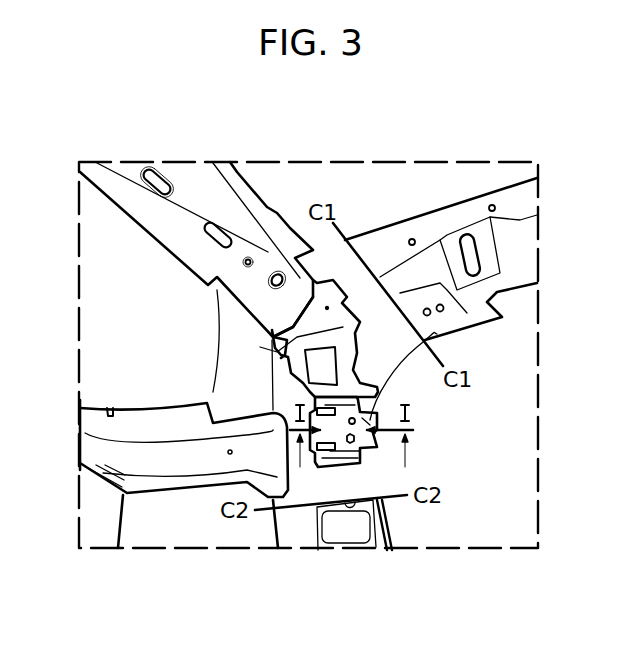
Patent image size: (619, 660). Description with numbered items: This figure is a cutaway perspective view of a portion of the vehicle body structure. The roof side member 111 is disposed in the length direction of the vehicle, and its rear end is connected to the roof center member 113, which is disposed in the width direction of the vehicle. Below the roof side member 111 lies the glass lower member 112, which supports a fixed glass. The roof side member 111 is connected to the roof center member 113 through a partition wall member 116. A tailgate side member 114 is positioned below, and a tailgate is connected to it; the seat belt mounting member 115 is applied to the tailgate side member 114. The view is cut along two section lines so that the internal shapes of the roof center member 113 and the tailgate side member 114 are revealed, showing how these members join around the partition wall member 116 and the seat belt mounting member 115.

The roof side member 111 is at (190, 212).
The glass lower member 112 is at (167, 458).
The roof center member 113 is at (397, 237).
The tailgate side member 114 is at (297, 527).
The seat belt mounting member 115 is at (385, 395).
The partition wall member 116 is at (280, 345).